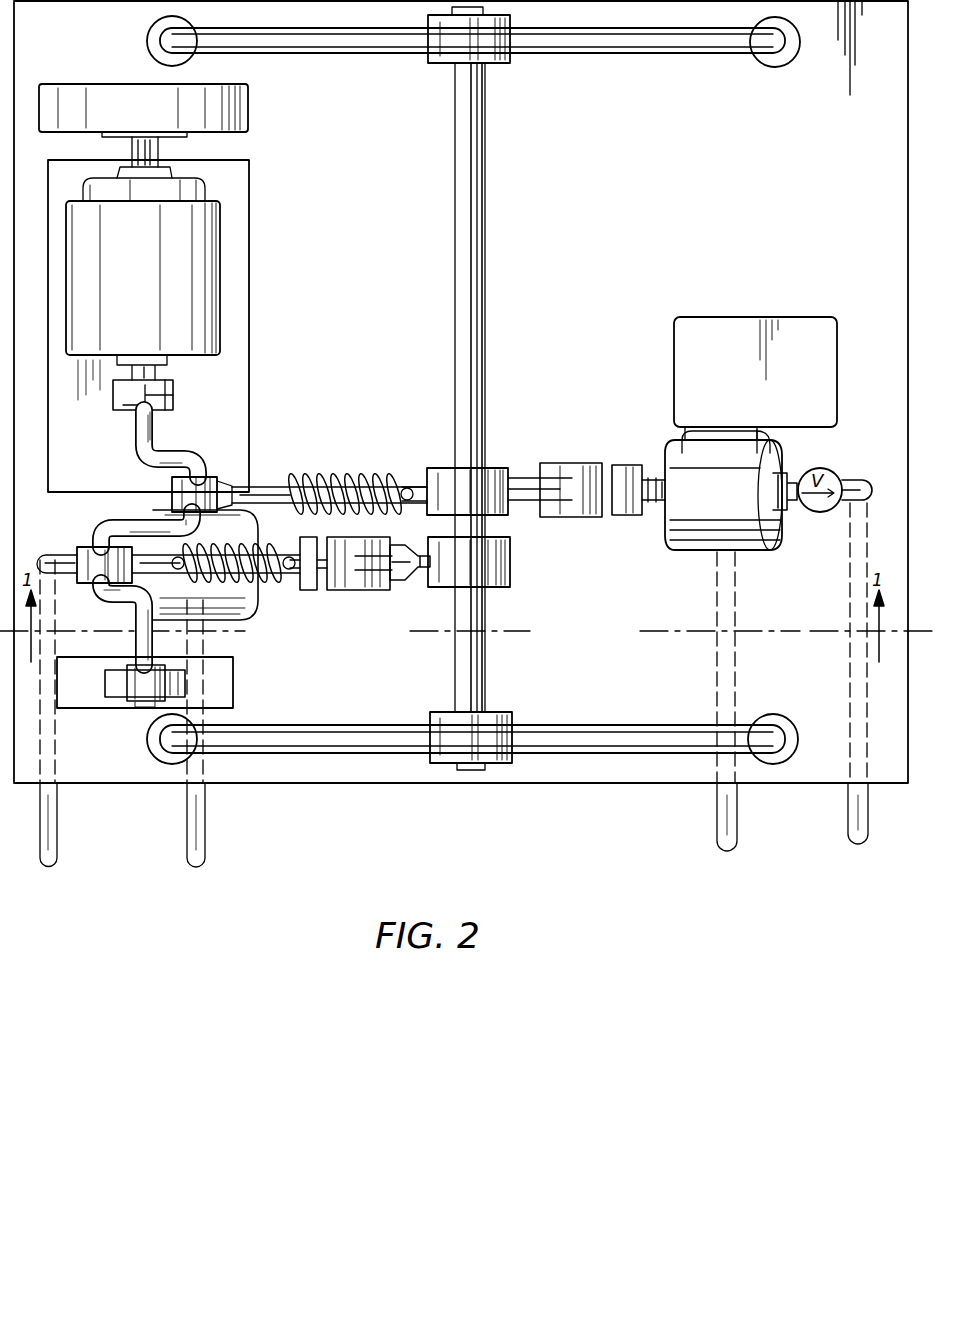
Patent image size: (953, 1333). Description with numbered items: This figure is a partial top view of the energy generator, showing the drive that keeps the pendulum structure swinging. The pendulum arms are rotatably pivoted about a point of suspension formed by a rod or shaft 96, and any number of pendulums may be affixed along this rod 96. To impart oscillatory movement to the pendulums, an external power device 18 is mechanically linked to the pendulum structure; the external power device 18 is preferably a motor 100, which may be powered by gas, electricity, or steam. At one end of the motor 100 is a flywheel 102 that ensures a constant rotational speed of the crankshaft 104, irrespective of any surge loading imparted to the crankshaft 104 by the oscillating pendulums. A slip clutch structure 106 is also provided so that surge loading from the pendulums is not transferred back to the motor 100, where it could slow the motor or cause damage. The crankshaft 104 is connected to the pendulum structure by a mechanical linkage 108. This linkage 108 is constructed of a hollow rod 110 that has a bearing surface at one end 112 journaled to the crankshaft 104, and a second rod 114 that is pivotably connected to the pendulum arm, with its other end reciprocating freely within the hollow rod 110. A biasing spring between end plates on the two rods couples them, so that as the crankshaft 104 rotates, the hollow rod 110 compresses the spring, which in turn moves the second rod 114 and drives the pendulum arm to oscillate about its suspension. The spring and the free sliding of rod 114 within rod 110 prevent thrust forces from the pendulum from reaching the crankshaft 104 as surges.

The external power device 18 is at (263, 249).
The rod or shaft 96 is at (482, 226).
The motor 100 is at (203, 318).
The flywheel 102 is at (240, 113).
The crankshaft 104 is at (137, 435).
The slip clutch structure 106 is at (173, 397).
The mechanical linkage 108 is at (332, 474).
The hollow rod 110 is at (268, 480).
The end of hollow rod 112 is at (217, 473).
The second rod 114 is at (382, 480).